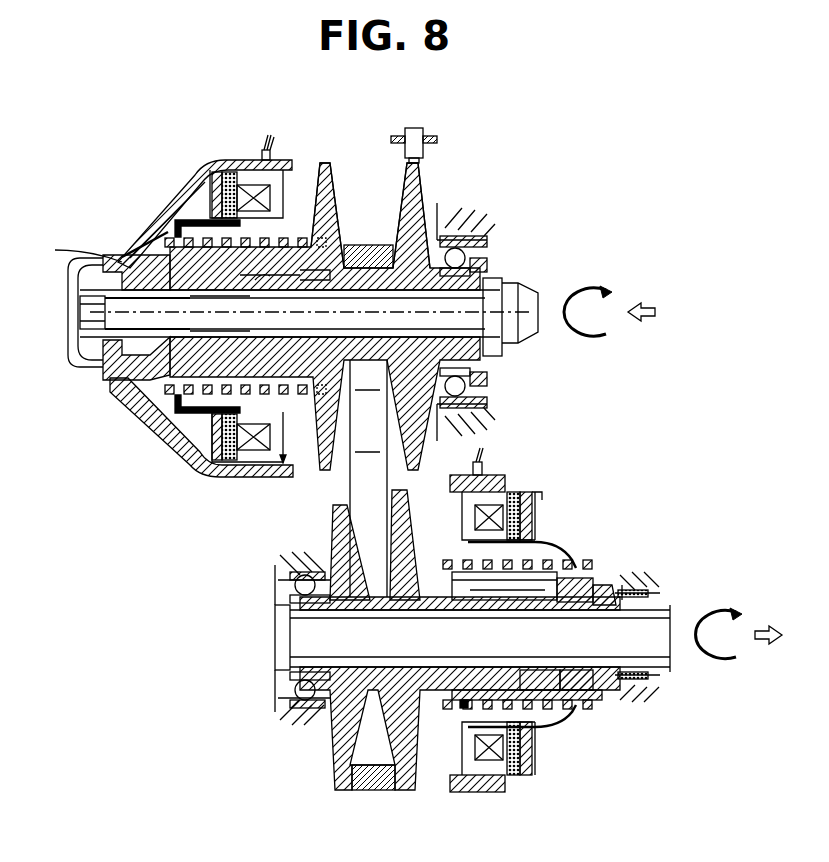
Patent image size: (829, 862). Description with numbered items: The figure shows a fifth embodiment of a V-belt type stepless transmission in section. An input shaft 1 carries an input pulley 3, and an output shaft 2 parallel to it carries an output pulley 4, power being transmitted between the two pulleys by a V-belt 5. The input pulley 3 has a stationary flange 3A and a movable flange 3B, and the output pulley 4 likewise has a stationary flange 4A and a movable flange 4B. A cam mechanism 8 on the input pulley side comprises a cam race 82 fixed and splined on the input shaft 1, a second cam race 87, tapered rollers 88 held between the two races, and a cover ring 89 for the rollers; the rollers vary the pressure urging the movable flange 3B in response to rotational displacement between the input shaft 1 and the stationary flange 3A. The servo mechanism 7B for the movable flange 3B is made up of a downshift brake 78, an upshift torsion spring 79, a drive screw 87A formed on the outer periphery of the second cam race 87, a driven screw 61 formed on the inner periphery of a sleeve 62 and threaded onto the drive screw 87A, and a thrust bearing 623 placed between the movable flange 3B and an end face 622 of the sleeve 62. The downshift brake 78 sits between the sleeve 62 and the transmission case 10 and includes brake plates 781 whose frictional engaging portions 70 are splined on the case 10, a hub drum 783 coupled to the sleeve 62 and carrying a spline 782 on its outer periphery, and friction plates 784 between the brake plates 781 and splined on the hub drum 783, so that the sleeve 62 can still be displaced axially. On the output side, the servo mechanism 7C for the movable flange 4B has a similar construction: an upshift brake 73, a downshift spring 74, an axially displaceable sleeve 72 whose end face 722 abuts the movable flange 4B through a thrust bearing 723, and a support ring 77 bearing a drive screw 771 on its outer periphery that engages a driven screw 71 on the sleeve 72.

The input shaft 1 is at (522, 300).
The output shaft 2 is at (665, 612).
The input pulley 3 is at (372, 192).
The stationary flange 3A is at (416, 205).
The movable flange 3B is at (332, 230).
The output pulley 4 is at (318, 755).
The stationary flange 4A is at (338, 782).
The movable flange 4B is at (408, 792).
The V-belt 5 is at (368, 244).
The servo mechanism 7B is at (175, 228).
The servo mechanism 7C is at (552, 493).
The cam mechanism 8 is at (150, 265).
The transmission case 10 is at (215, 165).
The driven screw 61 is at (185, 405).
The sleeve 62 is at (215, 430).
The frictional engaging portions 70 is at (200, 205).
The driven screw 71 is at (570, 580).
The sleeve 72 is at (560, 560).
The upshift brake 73 is at (515, 500).
The downshift spring 74 is at (438, 558).
The support ring 77 is at (630, 590).
The downshift brake 78 is at (245, 185).
The upshift torsion spring 79 is at (283, 395).
The cam race 82 is at (85, 362).
The cam race 87 is at (190, 284).
The drive screw 87A is at (228, 284).
The tapered rollers 88 is at (140, 378).
The cover ring 89 is at (75, 248).
The end face 622 is at (300, 276).
The thrust bearing 623 is at (320, 276).
The end face 722 is at (545, 724).
The thrust bearing 723 is at (462, 712).
The drive screw 771 is at (605, 585).
The brake plates 781 is at (228, 172).
The spline 782 is at (150, 240).
The hub drum 783 is at (165, 232).
The friction plates 784 is at (270, 205).